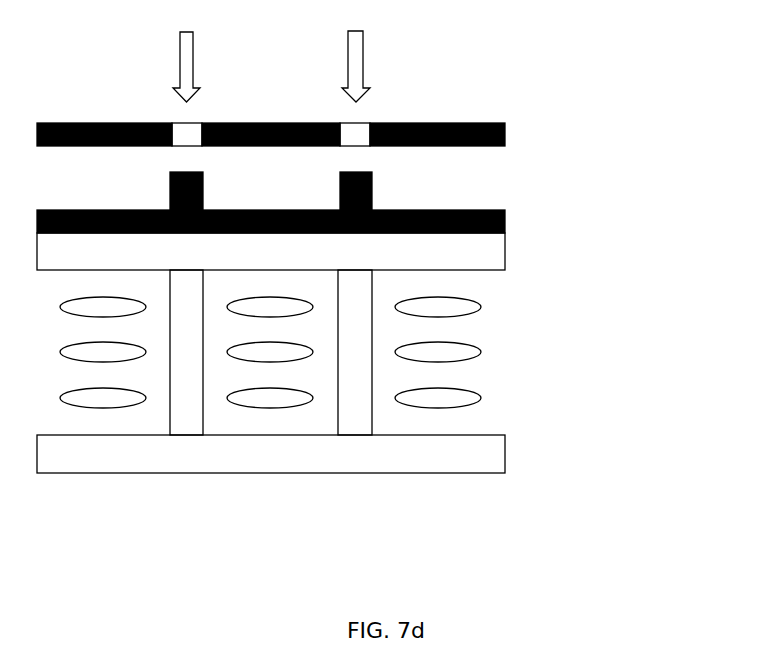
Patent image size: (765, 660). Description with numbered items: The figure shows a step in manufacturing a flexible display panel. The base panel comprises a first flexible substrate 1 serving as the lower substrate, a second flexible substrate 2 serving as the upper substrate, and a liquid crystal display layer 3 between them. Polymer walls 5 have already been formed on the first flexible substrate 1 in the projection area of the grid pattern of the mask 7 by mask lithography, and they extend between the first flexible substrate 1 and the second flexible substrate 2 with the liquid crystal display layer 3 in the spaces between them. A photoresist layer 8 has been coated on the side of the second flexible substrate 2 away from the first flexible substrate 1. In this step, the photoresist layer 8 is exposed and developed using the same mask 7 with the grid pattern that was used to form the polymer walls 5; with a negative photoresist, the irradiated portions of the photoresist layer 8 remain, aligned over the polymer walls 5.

The first flexible substrate 1 is at (487, 452).
The second flexible substrate 2 is at (482, 258).
The liquid crystal display layer 3 is at (482, 350).
The polymer walls 5 is at (183, 418).
The mask 7 is at (493, 122).
The photoresist layer 8 is at (370, 190).